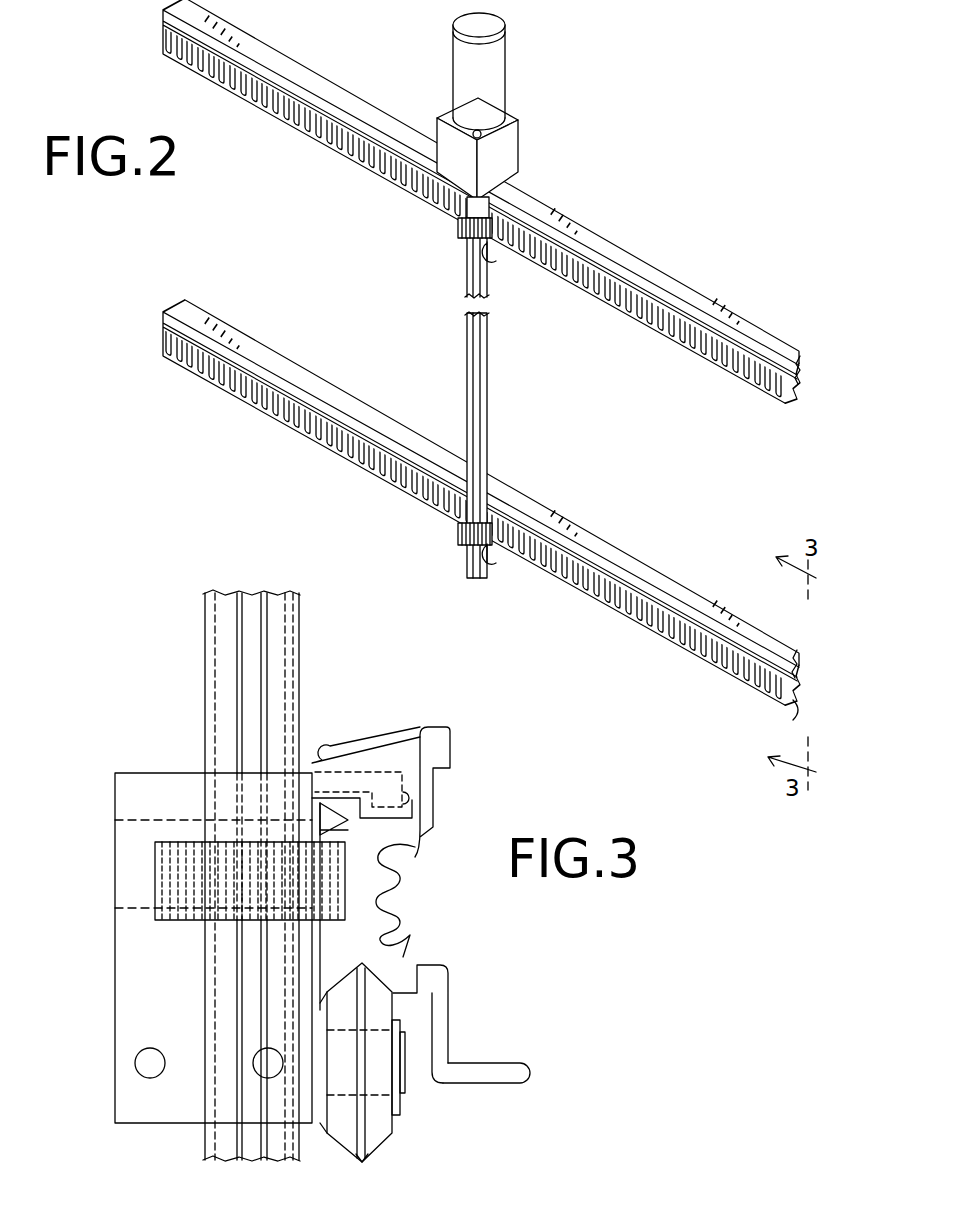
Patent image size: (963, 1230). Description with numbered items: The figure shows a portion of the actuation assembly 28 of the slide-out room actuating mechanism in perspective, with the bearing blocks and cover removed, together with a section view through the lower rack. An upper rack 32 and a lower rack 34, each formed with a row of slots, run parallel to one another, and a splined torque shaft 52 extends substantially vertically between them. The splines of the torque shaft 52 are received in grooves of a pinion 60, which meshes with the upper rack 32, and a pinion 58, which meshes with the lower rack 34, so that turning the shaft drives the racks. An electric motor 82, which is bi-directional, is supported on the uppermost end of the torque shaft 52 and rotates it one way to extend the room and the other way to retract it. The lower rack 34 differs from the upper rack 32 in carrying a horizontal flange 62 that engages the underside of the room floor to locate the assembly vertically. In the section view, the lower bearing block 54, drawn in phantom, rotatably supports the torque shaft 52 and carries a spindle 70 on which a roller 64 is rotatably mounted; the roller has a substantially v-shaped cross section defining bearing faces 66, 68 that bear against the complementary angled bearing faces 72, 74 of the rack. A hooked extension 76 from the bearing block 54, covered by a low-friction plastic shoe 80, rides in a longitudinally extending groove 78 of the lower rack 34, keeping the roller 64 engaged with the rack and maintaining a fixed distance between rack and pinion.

In FIG. 2, the actuation assembly 28 is at (622, 147).
In FIG. 2, the upper rack 32 is at (625, 250).
In FIG. 2, the lower rack 34 is at (677, 580).
In FIG. 3, the lower rack 34 is at (385, 907).
In FIG. 2, the torque shaft 52 is at (490, 420).
In FIG. 3, the torque shaft 52 is at (280, 660).
In FIG. 3, the lower bearing block 54 is at (165, 1125).
In FIG. 2, the pinion 58 is at (460, 535).
In FIG. 3, the pinion 58 is at (173, 862).
In FIG. 2, the pinion 60 is at (460, 220).
In FIG. 3, the horizontal flange 62 is at (517, 1070).
In FIG. 2, the roller 64 is at (500, 263).
In FIG. 3, the roller 64 is at (362, 1163).
In FIG. 3, the bearing face 66 is at (382, 1132).
In FIG. 3, the bearing face 68 is at (340, 1130).
In FIG. 3, the spindle 70 is at (402, 1068).
In FIG. 2, the angled bearing face 72 is at (793, 700).
In FIG. 3, the angled bearing face 72 is at (390, 977).
In FIG. 3, the angled bearing face 74 is at (342, 975).
In FIG. 3, the hooked extension 76 is at (423, 737).
In FIG. 2, the longitudinally extending groove 78 is at (774, 286).
In FIG. 3, the longitudinally extending groove 78 is at (412, 810).
In FIG. 2, the shoe 80 is at (477, 149).
In FIG. 3, the shoe 80 is at (397, 760).
In FIG. 2, the electric motor 82 is at (497, 80).